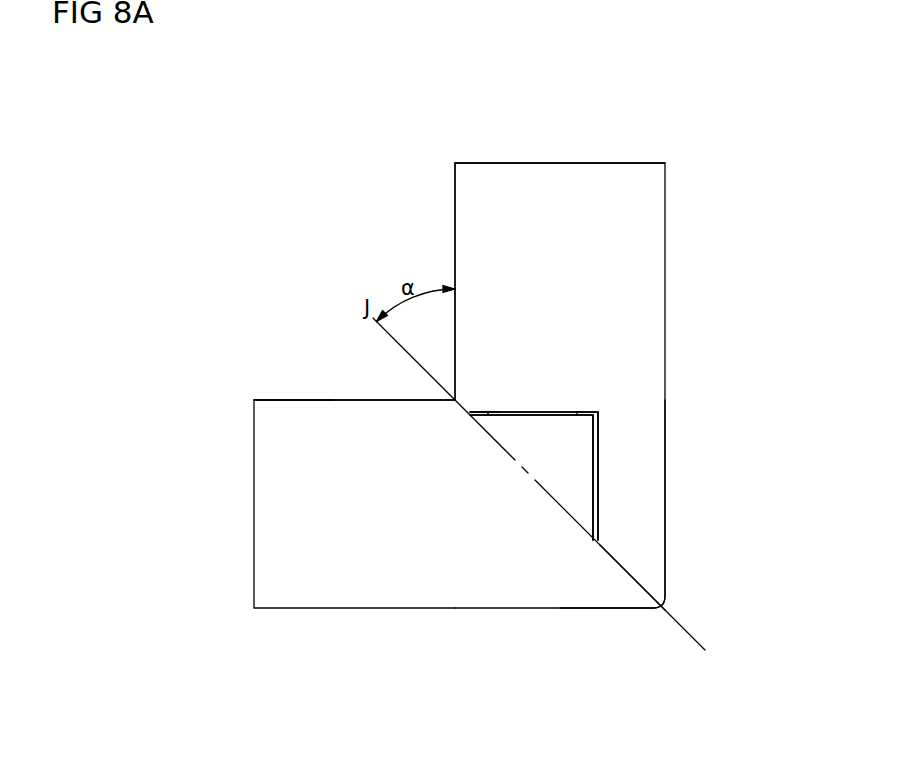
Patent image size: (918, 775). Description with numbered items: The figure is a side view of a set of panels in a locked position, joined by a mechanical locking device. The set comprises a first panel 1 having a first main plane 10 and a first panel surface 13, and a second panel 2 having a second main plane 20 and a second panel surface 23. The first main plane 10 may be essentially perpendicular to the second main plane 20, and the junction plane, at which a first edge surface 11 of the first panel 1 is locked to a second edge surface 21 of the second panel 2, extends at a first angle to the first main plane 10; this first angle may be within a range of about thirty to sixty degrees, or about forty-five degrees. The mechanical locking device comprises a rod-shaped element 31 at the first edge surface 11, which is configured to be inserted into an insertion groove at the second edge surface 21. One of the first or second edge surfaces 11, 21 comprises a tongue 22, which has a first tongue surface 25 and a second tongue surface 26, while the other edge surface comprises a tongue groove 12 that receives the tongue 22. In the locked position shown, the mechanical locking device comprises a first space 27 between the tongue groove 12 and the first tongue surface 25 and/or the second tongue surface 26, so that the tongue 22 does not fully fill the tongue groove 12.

The first panel 1 is at (665, 288).
The first main plane 10 is at (455, 245).
The first edge surface 11 is at (637, 579).
The tongue groove 12 is at (600, 411).
The first panel surface 13 is at (455, 190).
The second panel 2 is at (393, 608).
The second main plane 20 is at (348, 400).
The second edge surface 21 is at (633, 578).
The tongue 22 is at (563, 463).
The second panel surface 23 is at (307, 400).
The first tongue surface 25 is at (483, 413).
The second tongue surface 26 is at (593, 495).
The first space 27 is at (598, 430).
The rod-shaped element 31 is at (543, 413).